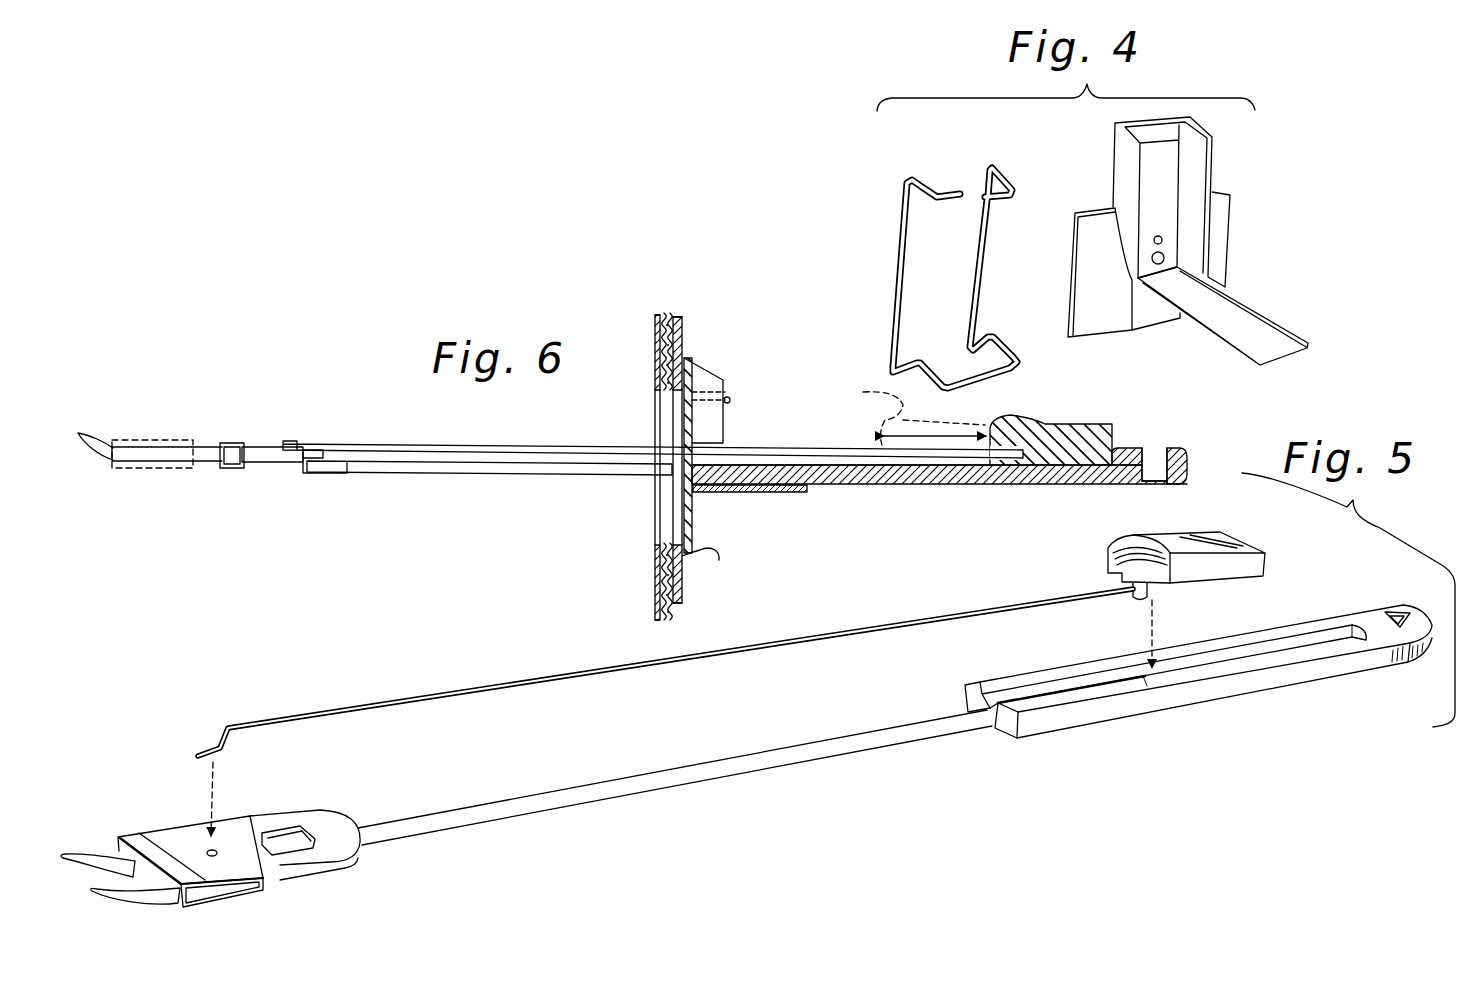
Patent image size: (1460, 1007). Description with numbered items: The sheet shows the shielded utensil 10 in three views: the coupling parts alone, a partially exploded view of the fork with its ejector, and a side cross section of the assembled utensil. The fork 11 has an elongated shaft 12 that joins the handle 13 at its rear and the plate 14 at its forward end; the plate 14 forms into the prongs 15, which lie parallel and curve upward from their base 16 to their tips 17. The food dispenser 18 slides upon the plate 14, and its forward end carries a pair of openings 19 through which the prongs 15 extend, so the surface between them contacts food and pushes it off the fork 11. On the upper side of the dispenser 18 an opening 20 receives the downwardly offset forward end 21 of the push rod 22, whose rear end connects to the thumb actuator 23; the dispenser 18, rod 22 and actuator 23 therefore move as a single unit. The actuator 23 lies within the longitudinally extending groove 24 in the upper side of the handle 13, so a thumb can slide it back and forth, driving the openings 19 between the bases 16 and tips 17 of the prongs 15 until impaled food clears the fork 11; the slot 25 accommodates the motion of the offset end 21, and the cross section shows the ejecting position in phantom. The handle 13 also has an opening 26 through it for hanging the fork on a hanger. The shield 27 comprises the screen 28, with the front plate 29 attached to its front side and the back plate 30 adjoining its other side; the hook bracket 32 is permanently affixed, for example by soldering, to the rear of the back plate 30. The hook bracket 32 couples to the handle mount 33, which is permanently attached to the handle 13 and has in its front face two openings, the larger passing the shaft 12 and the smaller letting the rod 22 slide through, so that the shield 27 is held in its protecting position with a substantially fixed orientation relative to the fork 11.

In FIG. 6, the shielded utensil 10 is at (292, 320).
In FIG. 6, the fork 11 is at (430, 440).
In FIG. 5, the fork 11 is at (548, 775).
In FIG. 6, the elongated shaft 12 is at (490, 476).
In FIG. 5, the elongated shaft 12 is at (638, 782).
In FIG. 6, the handle 13 is at (905, 480).
In FIG. 5, the handle 13 is at (1165, 700).
In FIG. 6, the plate 14 is at (328, 463).
In FIG. 5, the plate 14 is at (328, 810).
In FIG. 6, the prongs 15 is at (147, 445).
In FIG. 5, the prongs 15 is at (95, 852).
In FIG. 6, the base 16 is at (222, 462).
In FIG. 6, the tips 17 is at (80, 430).
In FIG. 6, the food dispenser 18 is at (258, 447).
In FIG. 5, the food dispenser 18 is at (222, 897).
In FIG. 5, the openings 19 is at (172, 855).
In FIG. 5, the opening 20 is at (220, 860).
In FIG. 5, the downwardly offset forward end 21 is at (205, 745).
In FIG. 6, the push rod 22 is at (505, 445).
In FIG. 5, the push rod 22 is at (428, 690).
In FIG. 6, the thumb actuator 23 is at (1068, 408).
In FIG. 5, the thumb actuator 23 is at (1115, 548).
In FIG. 6, the longitudinally extending groove 24 is at (832, 470).
In FIG. 5, the longitudinally extending groove 24 is at (1015, 695).
In FIG. 5, the slot 25 is at (272, 838).
In FIG. 6, the opening 26 is at (1160, 450).
In FIG. 5, the opening 26 is at (1393, 614).
In FIG. 6, the shield 27 is at (677, 459).
In FIG. 6, the screen 28 is at (675, 612).
In FIG. 6, the front plate 29 is at (655, 578).
In FIG. 6, the back plate 30 is at (685, 577).
In FIG. 4, the hook bracket 32 is at (892, 235).
In FIG. 6, the hook bracket 32 is at (725, 548).
In FIG. 4, the handle mount 33 is at (1232, 228).
In FIG. 6, the handle mount 33 is at (720, 375).